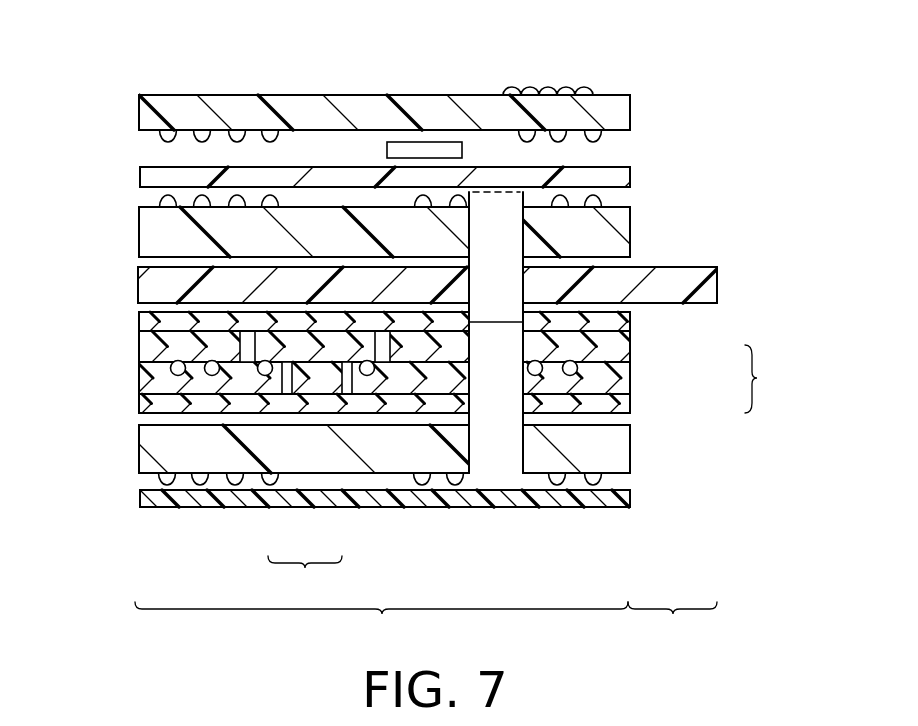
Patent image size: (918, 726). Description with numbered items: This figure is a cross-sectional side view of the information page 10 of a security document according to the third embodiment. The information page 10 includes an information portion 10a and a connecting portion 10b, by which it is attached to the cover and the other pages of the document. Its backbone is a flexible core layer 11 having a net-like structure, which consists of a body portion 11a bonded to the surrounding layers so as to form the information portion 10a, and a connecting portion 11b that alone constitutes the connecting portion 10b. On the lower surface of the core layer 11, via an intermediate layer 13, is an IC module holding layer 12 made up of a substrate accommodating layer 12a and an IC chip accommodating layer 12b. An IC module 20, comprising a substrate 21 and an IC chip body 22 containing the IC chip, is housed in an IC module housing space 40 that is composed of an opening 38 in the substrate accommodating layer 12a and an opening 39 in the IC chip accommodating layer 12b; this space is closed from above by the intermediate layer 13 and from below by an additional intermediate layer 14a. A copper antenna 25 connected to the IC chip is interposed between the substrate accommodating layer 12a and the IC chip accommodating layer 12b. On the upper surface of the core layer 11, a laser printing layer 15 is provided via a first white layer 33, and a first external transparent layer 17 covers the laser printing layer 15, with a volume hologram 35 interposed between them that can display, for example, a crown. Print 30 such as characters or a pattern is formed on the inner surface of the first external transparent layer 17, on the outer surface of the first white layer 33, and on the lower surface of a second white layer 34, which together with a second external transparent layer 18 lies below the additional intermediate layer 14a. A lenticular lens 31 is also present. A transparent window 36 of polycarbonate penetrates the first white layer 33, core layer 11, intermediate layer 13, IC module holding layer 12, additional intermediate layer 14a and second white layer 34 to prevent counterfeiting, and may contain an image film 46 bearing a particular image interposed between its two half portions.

The information page 10 is at (688, 68).
The information portion 10a is at (381, 623).
The connecting portion 10b is at (672, 623).
The core layer 11 is at (717, 272).
The body portion 11a is at (148, 283).
The connecting portion 11b is at (717, 289).
The IC module holding layer 12 is at (463, 372).
The substrate accommodating layer 12a is at (623, 347).
The IC chip accommodating layer 12b is at (623, 382).
The intermediate layer 13 is at (623, 320).
The additional intermediate layer 14a is at (623, 405).
The laser printing layer 15 is at (623, 180).
The first external transparent layer 17 is at (623, 108).
The second external transparent layer 18 is at (623, 500).
The IC module 20 is at (305, 576).
The substrate 21 is at (303, 348).
The IC chip body 22 is at (328, 385).
The antenna 25 is at (171, 368).
The print 30 is at (600, 139).
The lenticular lens 31 is at (598, 82).
The first white layer 33 is at (623, 235).
The second white layer 34 is at (623, 455).
The volume hologram 35 is at (387, 150).
The transparent window 36 is at (502, 455).
The opening 38 is at (383, 355).
The opening 39 is at (345, 388).
The IC module housing space 40 is at (247, 357).
The image film 46 is at (497, 330).